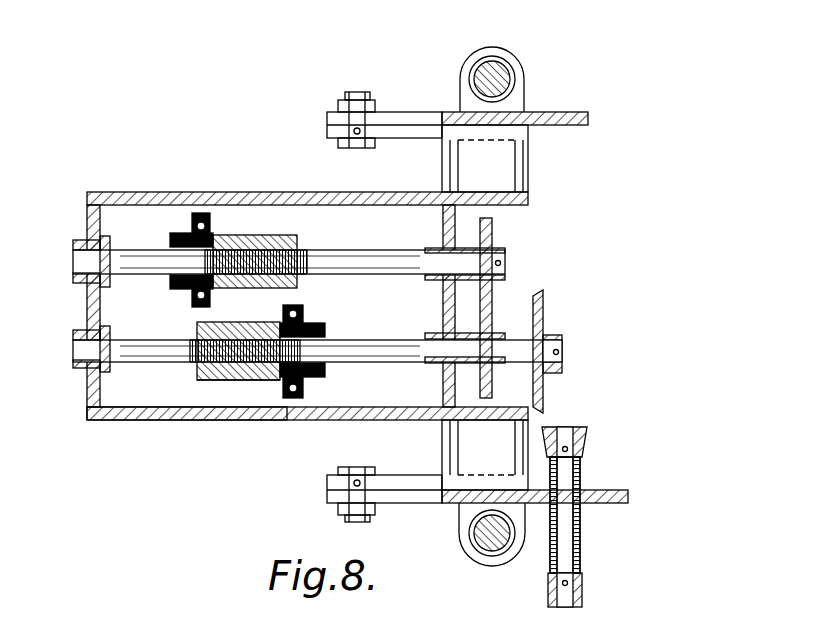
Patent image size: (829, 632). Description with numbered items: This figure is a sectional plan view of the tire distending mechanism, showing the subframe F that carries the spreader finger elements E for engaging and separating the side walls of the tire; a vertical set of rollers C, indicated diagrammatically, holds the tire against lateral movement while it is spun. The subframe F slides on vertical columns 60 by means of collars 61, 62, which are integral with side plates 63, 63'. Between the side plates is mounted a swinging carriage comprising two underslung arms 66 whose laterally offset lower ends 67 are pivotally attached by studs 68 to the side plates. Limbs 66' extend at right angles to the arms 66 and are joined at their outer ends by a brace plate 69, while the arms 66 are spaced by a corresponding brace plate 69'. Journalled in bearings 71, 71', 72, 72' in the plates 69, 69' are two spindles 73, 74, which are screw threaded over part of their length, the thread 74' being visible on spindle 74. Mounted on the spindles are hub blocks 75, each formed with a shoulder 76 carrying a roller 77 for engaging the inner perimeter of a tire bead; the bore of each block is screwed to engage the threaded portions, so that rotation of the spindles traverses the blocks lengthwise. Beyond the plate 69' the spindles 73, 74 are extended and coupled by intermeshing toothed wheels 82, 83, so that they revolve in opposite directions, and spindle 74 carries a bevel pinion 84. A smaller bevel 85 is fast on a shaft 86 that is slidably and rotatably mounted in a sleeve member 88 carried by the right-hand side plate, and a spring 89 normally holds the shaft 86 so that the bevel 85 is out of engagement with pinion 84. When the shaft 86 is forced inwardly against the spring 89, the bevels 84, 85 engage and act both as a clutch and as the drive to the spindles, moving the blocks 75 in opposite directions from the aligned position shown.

The vertical column 60 is at (500, 72).
The collar 61 is at (472, 512).
The collar 62 is at (520, 73).
The side plate 63 is at (556, 508).
The side plate 63' is at (462, 104).
The underslung arm 66 is at (331, 336).
The limb 66' is at (187, 437).
The laterally offset lower end 67 is at (420, 455).
The stud 68 is at (357, 92).
The brace plate 69 is at (71, 306).
The brace plate 69' is at (475, 285).
The bearing 71 is at (72, 261).
The bearing 71' is at (450, 248).
The bearing 72 is at (77, 363).
The bearing 72' is at (452, 365).
The spindle 73 is at (373, 236).
The spindle 74 is at (316, 335).
The screw thread 74' is at (236, 419).
The hub block 75 is at (288, 240).
The shoulder 76 is at (215, 233).
The roller 77 is at (192, 305).
The toothed wheel 82 is at (505, 263).
The toothed wheel 83 is at (498, 318).
The bevel pinion 84 is at (545, 322).
The bevel 85 is at (587, 438).
The shaft 86 is at (568, 515).
The sleeve member 88 is at (582, 490).
The spring 89 is at (584, 564).
The subframe F is at (197, 172).
The spreader finger element E is at (247, 232).
The vertical set of rollers C is at (297, 622).